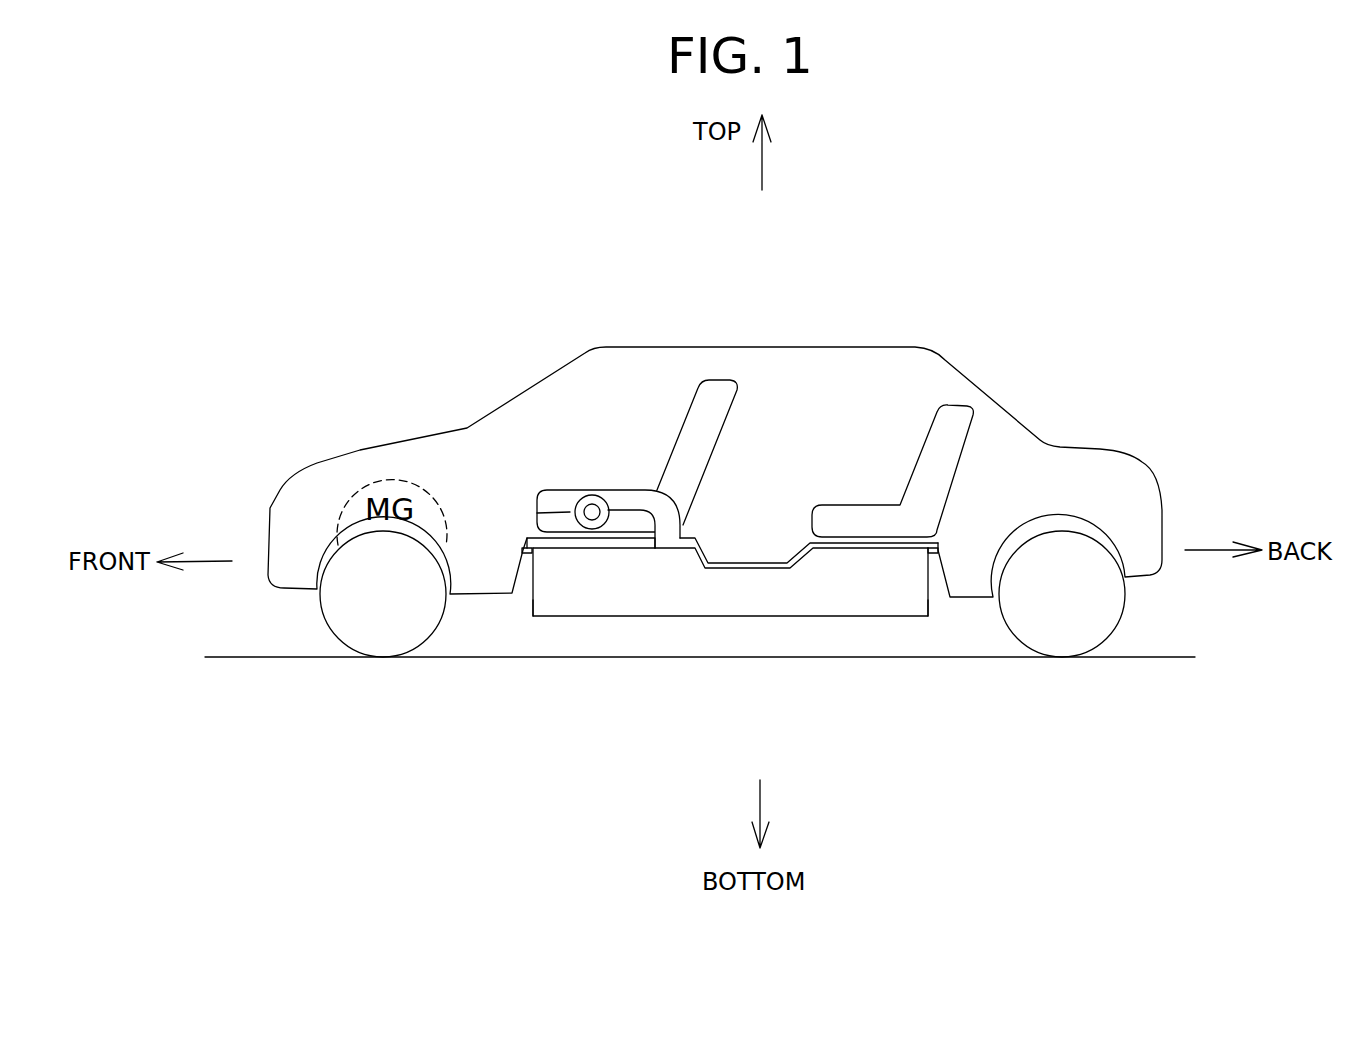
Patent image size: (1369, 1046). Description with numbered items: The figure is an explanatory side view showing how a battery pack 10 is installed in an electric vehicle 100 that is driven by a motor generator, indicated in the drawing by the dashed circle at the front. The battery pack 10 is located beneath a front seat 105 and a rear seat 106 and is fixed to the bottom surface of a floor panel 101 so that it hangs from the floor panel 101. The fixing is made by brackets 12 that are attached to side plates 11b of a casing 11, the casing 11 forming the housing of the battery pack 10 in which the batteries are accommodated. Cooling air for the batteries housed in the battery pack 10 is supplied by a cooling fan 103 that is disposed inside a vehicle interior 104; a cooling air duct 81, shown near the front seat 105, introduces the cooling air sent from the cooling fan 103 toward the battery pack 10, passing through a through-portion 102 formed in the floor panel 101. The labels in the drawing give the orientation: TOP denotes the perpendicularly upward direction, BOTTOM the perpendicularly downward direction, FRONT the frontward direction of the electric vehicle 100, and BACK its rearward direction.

The battery pack 10 is at (676, 634).
The casing 11 is at (820, 618).
The side plates 11b is at (530, 603).
The brackets 12 is at (523, 552).
The cooling air duct 81 is at (630, 500).
The electric vehicle 100 is at (1103, 268).
The floor panel 101 is at (757, 557).
The through-portion 102 is at (682, 535).
The cooling fan 103 is at (570, 512).
The vehicle interior 104 is at (835, 378).
The front seat 105 is at (690, 403).
The rear seat 106 is at (957, 403).